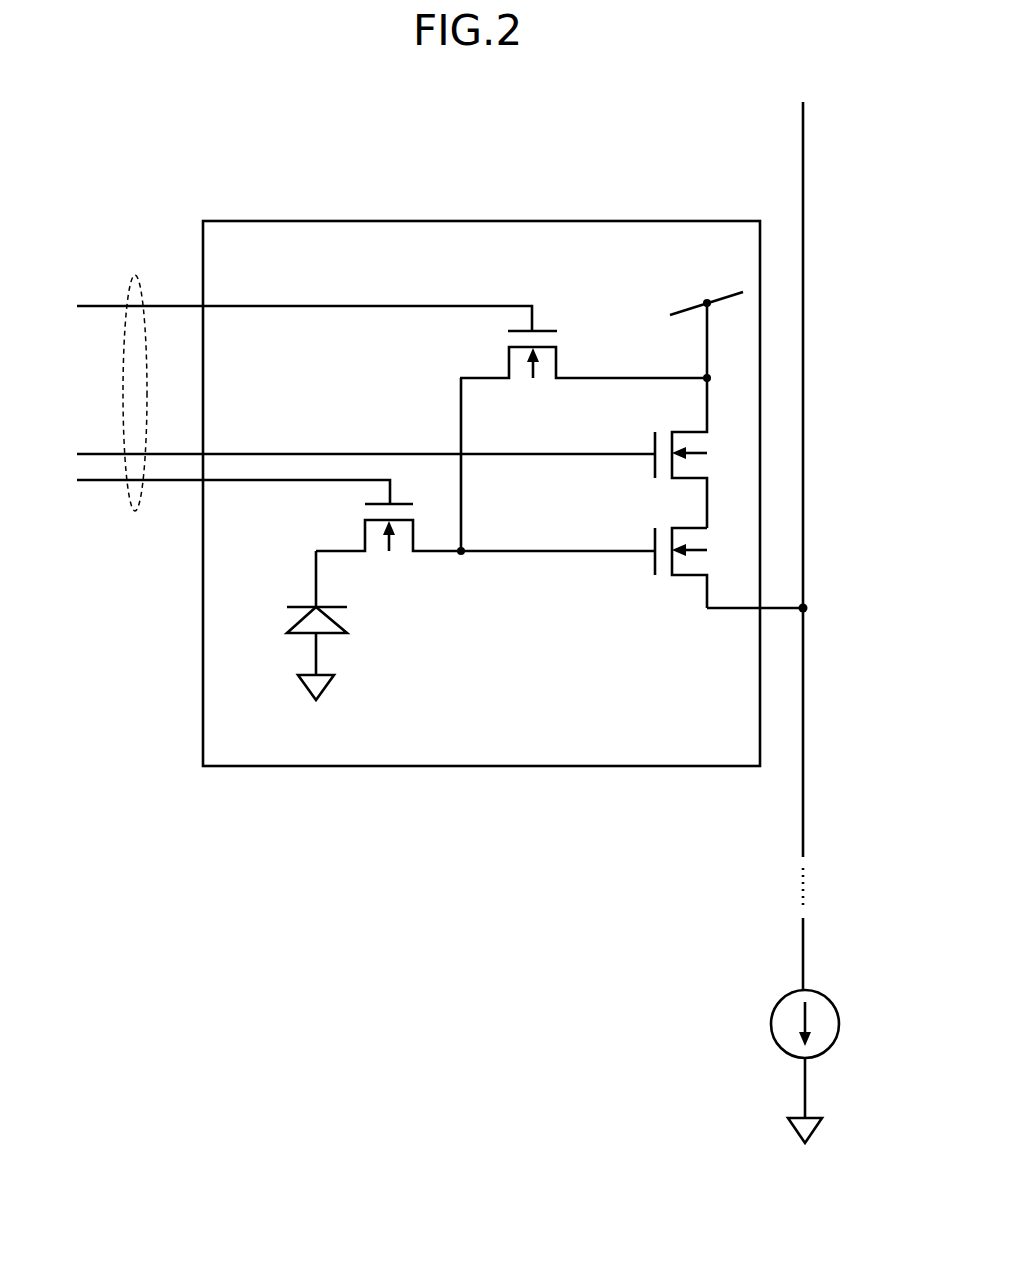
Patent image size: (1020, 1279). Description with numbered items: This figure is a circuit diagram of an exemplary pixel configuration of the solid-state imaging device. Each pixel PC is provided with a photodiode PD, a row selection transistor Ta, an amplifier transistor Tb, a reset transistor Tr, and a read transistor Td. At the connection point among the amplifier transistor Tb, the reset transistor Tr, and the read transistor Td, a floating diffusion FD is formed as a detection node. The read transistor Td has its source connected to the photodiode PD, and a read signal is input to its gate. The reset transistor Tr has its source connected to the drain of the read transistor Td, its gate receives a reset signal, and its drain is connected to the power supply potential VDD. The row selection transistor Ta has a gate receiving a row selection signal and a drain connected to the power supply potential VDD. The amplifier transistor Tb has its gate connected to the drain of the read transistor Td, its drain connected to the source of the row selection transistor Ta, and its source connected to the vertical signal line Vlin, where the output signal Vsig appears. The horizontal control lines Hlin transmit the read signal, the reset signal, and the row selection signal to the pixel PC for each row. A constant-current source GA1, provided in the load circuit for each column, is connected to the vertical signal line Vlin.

The pixel PC is at (274, 221).
The horizontal control lines Hlin is at (134, 380).
The reset transistor Tr is at (508, 372).
The power supply potential VDD is at (706, 325).
The floating diffusion FD is at (461, 555).
The row selection transistor Ta is at (655, 468).
The amplifier transistor Tb is at (655, 568).
The read transistor Td is at (365, 538).
The photodiode PD is at (345, 620).
The signal output node Vsig is at (783, 608).
The vertical signal line Vlin is at (805, 330).
The constant-current source GA1 is at (840, 1022).